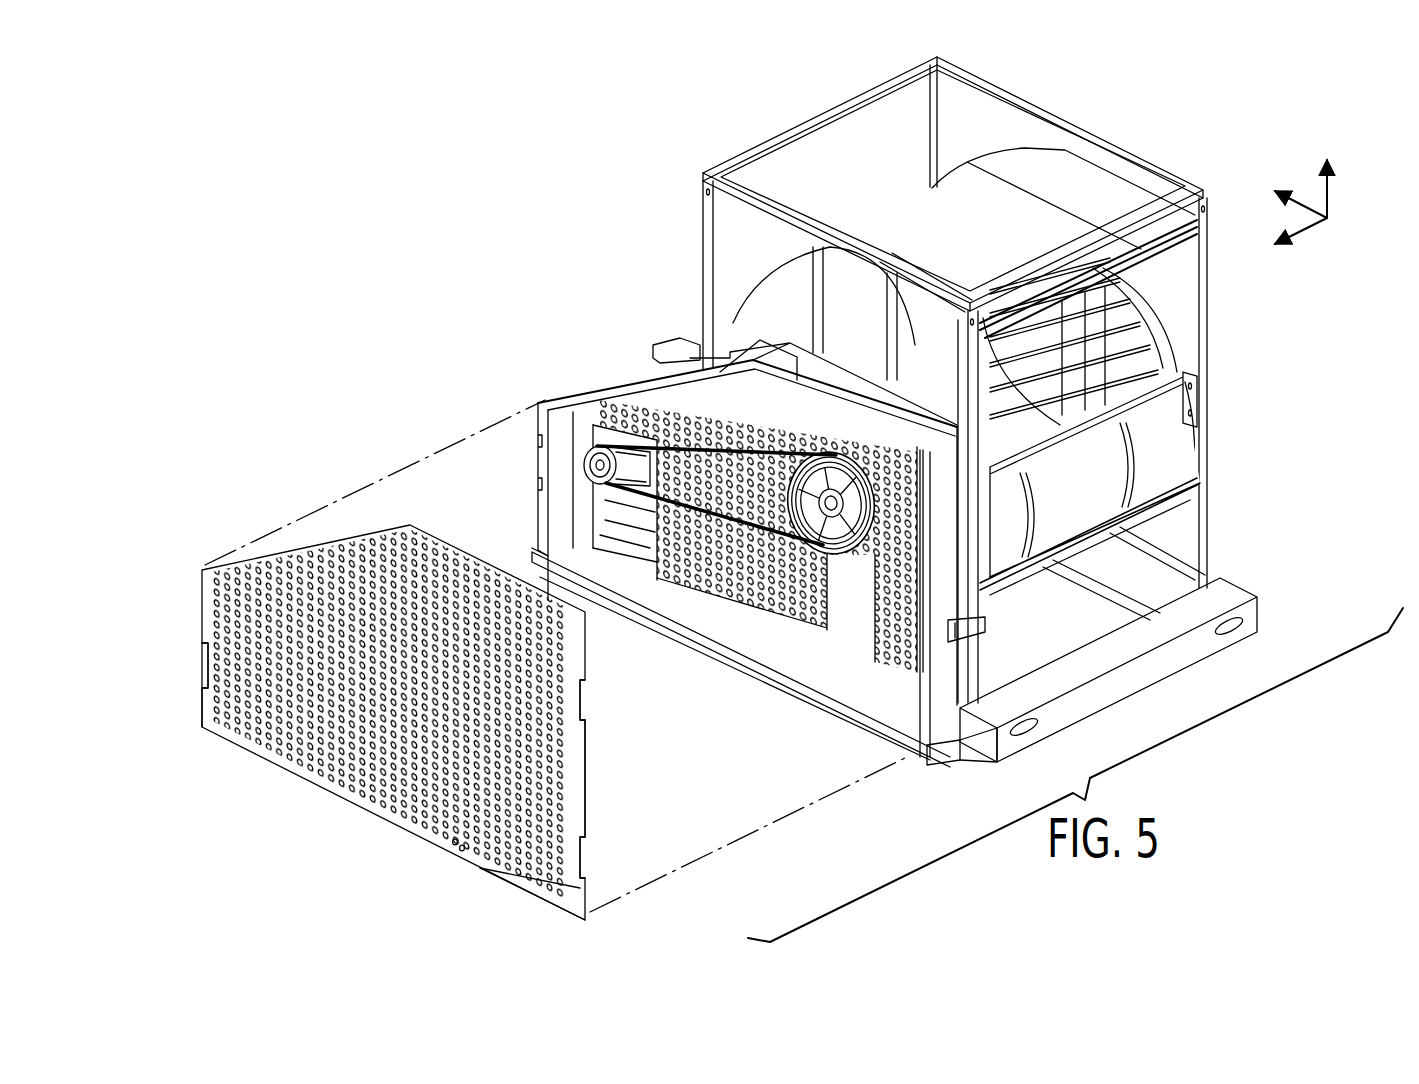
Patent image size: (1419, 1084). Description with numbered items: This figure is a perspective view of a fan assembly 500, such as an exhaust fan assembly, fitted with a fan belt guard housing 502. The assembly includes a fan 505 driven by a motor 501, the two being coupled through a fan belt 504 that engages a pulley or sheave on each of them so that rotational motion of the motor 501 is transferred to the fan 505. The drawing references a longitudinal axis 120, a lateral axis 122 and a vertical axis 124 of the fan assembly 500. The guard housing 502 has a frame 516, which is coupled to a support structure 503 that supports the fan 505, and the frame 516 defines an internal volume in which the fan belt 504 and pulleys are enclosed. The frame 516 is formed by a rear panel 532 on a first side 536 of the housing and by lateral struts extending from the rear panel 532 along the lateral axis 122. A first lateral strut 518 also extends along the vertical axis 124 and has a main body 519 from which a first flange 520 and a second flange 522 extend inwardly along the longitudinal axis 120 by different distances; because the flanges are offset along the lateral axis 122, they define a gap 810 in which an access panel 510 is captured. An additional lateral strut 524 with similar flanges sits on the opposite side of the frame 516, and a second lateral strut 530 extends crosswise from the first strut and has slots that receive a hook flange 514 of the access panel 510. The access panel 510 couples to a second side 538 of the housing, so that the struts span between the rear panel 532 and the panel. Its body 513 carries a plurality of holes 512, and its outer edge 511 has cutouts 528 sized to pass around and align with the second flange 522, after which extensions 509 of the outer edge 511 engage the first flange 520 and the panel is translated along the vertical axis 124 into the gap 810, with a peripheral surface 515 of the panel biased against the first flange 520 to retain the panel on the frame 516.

The fan assembly 500 is at (738, 100).
The motor 501 is at (583, 453).
The fan belt guard housing 502 is at (726, 564).
The support structure 503 is at (1108, 636).
The fan belt 504 is at (607, 423).
The fan 505 is at (1235, 427).
The extensions 509 is at (588, 783).
The access panel 510 is at (409, 735).
The outer edge 511 is at (600, 887).
The holes 512 is at (462, 850).
The body 513 is at (207, 752).
The hook flange 514 is at (540, 588).
The peripheral surface 515 is at (522, 905).
The frame 516 is at (625, 378).
The first lateral strut 518 is at (943, 723).
The main body 519 is at (978, 750).
The first flange 520 is at (900, 640).
The second flange 522 is at (855, 630).
The additional lateral strut 524 is at (797, 357).
The cutouts 528 is at (204, 662).
The second lateral strut 530 is at (850, 385).
The rear panel 532 is at (790, 600).
The first side 536 is at (992, 648).
The second side 538 is at (718, 665).
The gap 810 is at (940, 497).
The longitudinal axis 120 is at (1336, 192).
The lateral axis 122 is at (1305, 228).
The vertical axis 124 is at (1327, 190).